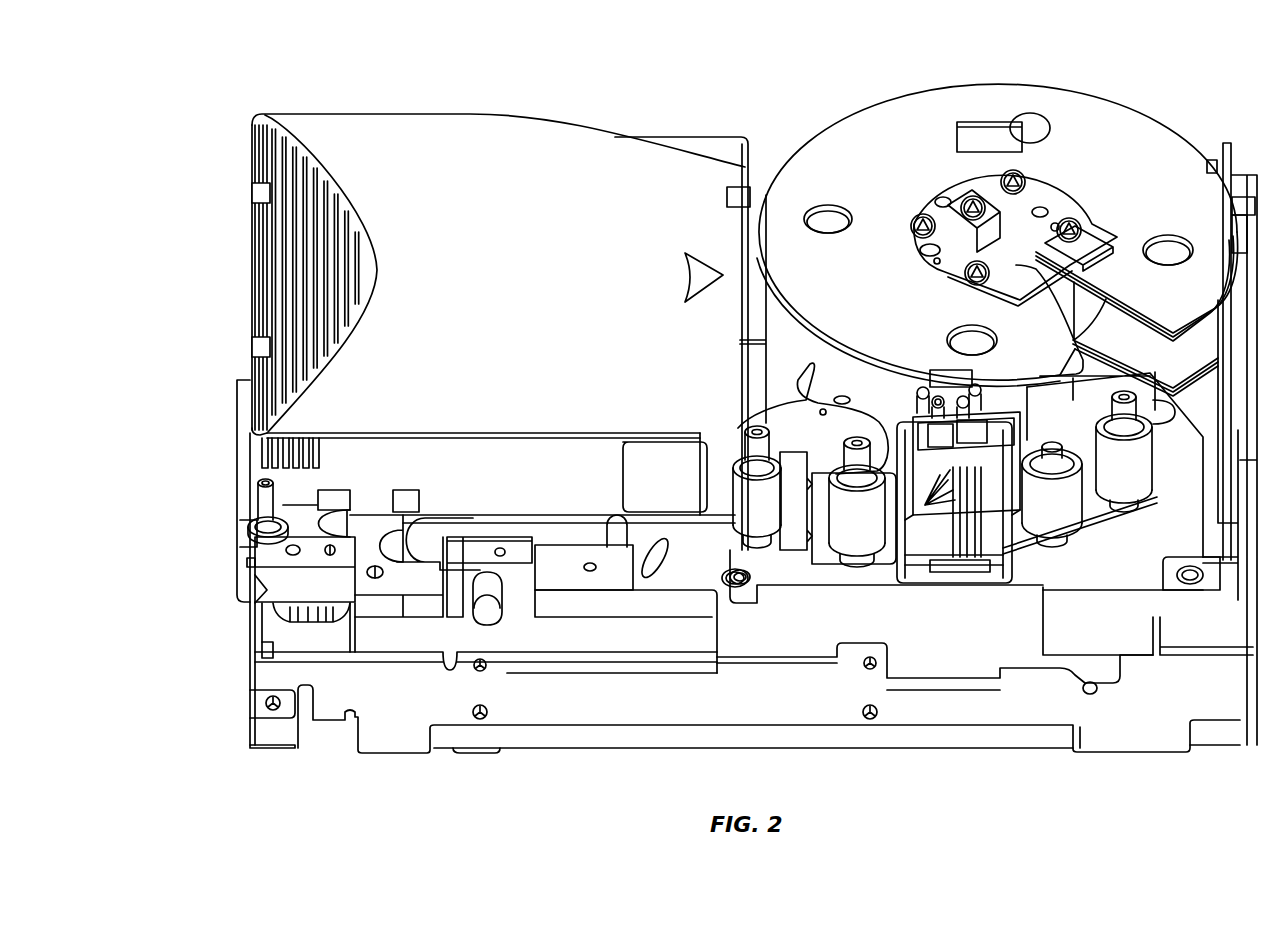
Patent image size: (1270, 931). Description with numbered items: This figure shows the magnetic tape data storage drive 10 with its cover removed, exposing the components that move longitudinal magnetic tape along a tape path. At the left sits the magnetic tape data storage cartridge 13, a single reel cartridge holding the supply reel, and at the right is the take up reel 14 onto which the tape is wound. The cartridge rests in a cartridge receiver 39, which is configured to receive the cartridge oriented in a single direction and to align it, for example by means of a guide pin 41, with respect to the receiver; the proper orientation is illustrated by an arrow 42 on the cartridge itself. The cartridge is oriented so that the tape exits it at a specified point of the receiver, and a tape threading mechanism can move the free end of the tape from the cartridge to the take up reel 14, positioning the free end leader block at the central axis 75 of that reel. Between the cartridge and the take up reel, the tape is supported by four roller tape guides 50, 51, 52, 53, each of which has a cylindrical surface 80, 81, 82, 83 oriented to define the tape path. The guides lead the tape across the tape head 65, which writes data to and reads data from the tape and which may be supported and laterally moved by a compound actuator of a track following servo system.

The magnetic tape data storage drive 10 is at (790, 67).
The magnetic tape data storage cartridge 13 is at (417, 113).
The take up reel 14 is at (1118, 107).
The cartridge receiver 39 is at (234, 457).
The guide pin 41 is at (257, 503).
The arrow 42 is at (704, 258).
The roller tape guide 50 is at (745, 474).
The roller tape guide 51 is at (1126, 465).
The roller tape guide 52 is at (841, 518).
The roller tape guide 53 is at (1052, 504).
The tape head 65 is at (972, 547).
The central axis 75 is at (947, 267).
The cylindrical surface 80 is at (745, 505).
The cylindrical surface 81 is at (1157, 463).
The cylindrical surface 82 is at (830, 497).
The cylindrical surface 83 is at (1087, 497).